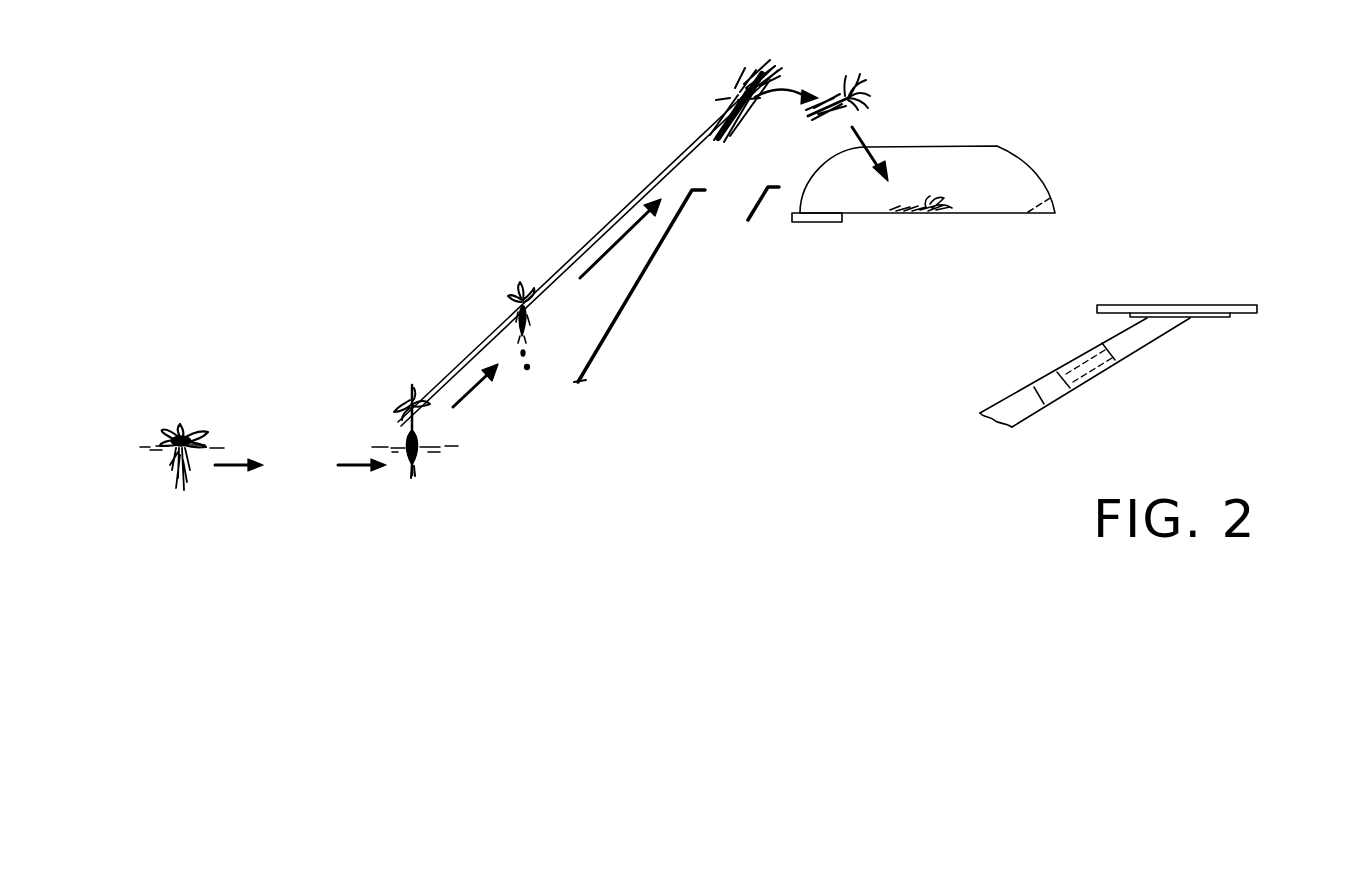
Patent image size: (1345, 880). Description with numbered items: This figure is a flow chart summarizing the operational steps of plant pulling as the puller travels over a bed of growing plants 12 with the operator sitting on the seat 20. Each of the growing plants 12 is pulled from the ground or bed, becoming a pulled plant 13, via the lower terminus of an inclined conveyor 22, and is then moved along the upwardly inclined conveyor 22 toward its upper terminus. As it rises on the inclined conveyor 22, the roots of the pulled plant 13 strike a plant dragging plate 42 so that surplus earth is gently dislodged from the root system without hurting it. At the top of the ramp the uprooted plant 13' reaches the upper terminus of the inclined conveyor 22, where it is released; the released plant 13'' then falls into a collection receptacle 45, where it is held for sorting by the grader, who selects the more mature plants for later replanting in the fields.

The growing plants 12 is at (177, 436).
The pulled plant 13 is at (410, 411).
The uprooted plant at top of ramp 13' is at (733, 92).
The released plant 13'' is at (882, 95).
The inclined conveyor 22 is at (577, 238).
The plant dragging plate 42 is at (594, 358).
The collection receptacle 45 is at (1058, 211).
The seat 20 is at (1260, 311).